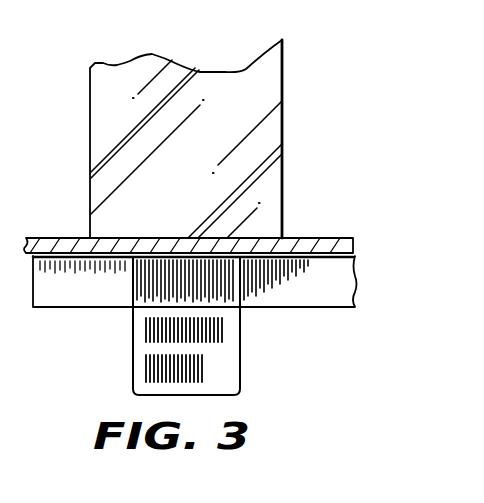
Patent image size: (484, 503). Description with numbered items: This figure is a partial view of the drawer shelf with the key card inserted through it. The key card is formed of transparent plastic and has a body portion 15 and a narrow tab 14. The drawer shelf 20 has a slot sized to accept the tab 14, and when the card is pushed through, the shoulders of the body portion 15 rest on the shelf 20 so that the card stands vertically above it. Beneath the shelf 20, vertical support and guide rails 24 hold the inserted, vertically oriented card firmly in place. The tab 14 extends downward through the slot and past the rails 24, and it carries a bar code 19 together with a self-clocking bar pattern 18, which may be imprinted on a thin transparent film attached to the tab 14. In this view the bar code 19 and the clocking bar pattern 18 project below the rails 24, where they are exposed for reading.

The body portion 15 is at (104, 118).
The drawer shelf 20 is at (68, 202).
The vertical support and guide rails 24 is at (66, 295).
The narrow tab 14 is at (240, 338).
The self-clocking bar pattern 18 is at (145, 334).
The bar code 19 is at (206, 378).